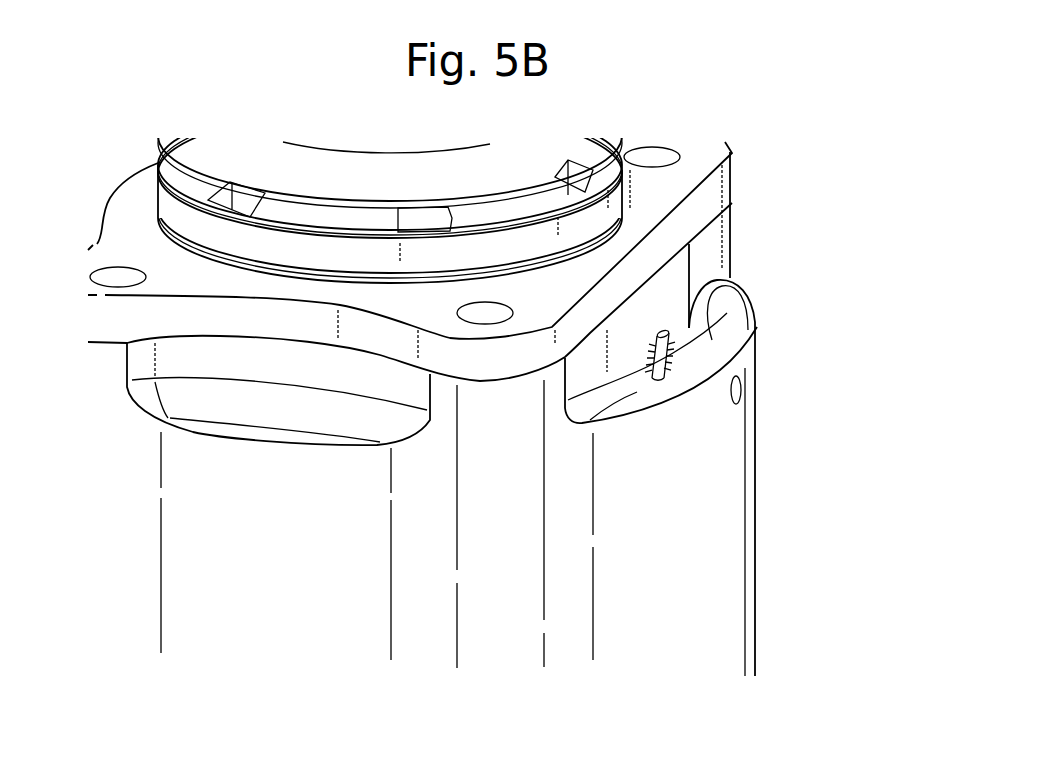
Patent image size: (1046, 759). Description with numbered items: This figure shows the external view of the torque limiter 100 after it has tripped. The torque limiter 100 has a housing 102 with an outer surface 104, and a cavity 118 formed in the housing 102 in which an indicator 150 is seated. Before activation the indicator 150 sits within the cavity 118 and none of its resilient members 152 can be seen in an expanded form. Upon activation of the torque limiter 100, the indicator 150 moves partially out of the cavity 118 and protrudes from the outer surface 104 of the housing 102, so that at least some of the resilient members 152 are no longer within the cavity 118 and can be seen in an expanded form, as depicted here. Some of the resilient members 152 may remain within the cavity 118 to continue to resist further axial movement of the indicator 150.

The torque limiter 100 is at (876, 238).
The housing 102 is at (702, 530).
The outer surface 104 is at (737, 298).
The cavity 118 is at (660, 378).
The indicator 150 is at (667, 336).
The resilient members 152 is at (672, 351).